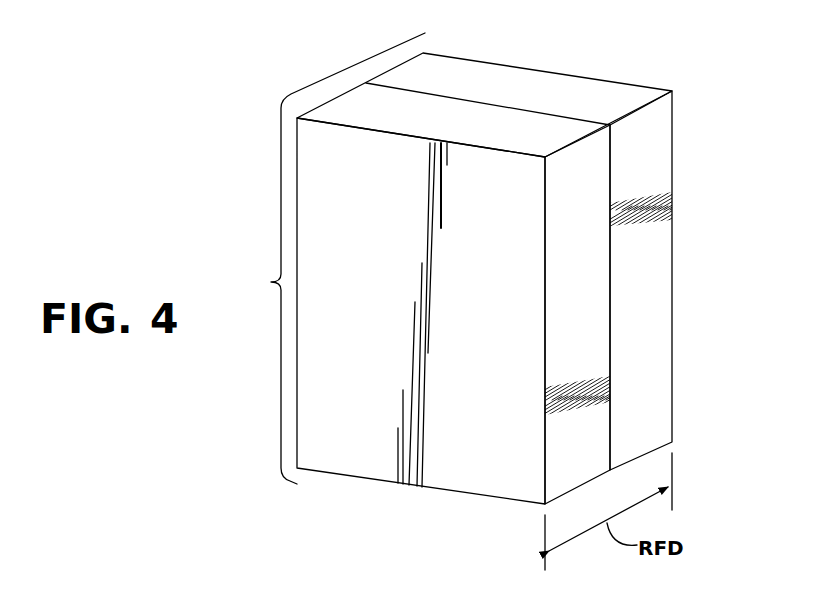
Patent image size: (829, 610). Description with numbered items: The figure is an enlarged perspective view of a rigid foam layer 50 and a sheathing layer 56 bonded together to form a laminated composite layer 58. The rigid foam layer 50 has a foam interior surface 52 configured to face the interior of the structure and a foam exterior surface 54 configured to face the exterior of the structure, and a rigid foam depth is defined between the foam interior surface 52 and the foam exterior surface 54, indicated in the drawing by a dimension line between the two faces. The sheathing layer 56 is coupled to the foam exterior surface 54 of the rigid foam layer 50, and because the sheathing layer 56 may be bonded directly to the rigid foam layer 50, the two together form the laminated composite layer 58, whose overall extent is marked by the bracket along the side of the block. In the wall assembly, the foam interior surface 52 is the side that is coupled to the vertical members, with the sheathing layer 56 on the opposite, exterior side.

The rigid foam layer 50 is at (542, 95).
The foam interior surface 52 is at (684, 147).
The foam exterior surface 54 is at (606, 260).
The sheathing layer 56 is at (357, 453).
The laminated composite layer 58 is at (331, 258).